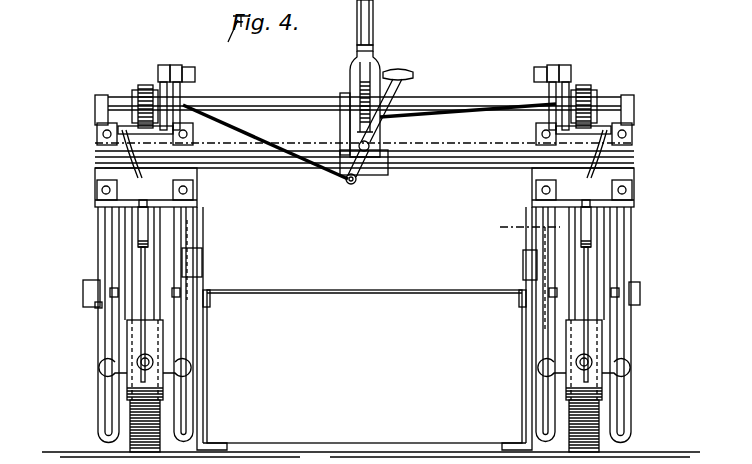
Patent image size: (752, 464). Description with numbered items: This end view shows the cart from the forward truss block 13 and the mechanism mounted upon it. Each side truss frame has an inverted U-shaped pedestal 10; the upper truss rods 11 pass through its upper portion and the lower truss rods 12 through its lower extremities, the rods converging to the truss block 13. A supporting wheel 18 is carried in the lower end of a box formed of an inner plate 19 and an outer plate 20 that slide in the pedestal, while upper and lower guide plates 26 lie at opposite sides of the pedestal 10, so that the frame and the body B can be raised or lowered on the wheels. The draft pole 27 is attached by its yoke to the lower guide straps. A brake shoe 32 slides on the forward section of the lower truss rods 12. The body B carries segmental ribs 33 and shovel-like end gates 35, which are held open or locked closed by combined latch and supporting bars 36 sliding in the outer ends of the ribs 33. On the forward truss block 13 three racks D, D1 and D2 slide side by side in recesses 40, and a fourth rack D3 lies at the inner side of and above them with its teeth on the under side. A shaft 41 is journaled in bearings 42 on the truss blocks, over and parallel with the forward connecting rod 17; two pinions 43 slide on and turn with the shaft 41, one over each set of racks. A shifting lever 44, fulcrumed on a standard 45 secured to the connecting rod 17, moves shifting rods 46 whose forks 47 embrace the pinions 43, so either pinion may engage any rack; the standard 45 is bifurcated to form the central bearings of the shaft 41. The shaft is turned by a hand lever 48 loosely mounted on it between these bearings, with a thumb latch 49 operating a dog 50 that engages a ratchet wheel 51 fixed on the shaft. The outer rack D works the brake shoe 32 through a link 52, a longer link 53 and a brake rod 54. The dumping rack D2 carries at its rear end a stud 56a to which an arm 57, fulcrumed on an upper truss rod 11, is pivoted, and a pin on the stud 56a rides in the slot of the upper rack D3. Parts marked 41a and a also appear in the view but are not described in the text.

The pedestal 10 is at (116, 404).
The upper truss rods 11 is at (97, 134).
The lower truss rods 12 is at (98, 222).
The front truss block 13 is at (97, 186).
The connecting rods 17 is at (312, 165).
The supporting wheel 18 is at (152, 241).
The inner box plate 19 is at (112, 266).
The outer box plate 20 is at (162, 256).
The guide plates 26 is at (95, 306).
The pole 27 is at (83, 296).
The brake shoe 32 is at (160, 335).
The segmental ribs 33 is at (202, 262).
The end gates 35 is at (364, 366).
The combined latch and supporting bars 36 is at (195, 372).
The recesses 40 is at (96, 158).
The shaft 41 is at (306, 98).
The extension 41a is at (233, 21).
The bearings 42 is at (95, 112).
The pinions 43 is at (143, 88).
The shifting lever 44 is at (358, 182).
The standard 45 is at (388, 146).
The shifting rods 46 is at (500, 108).
The forks 47 is at (186, 106).
The hand lever 48 is at (376, 62).
The thumb latch 49 is at (357, 32).
The dog 50 is at (362, 75).
The ratchet wheel 51 is at (392, 80).
The link 52 is at (105, 170).
The longer link 53 is at (148, 202).
The brake rod 54 is at (210, 300).
The stud 56a is at (163, 66).
The arm 57 is at (176, 66).
The outer rack D is at (644, 112).
The rack D1 is at (364, 154).
The dumping rack D2 is at (193, 134).
The upper rack D3 is at (196, 72).
The lug a is at (343, 289).
The body B is at (364, 269).